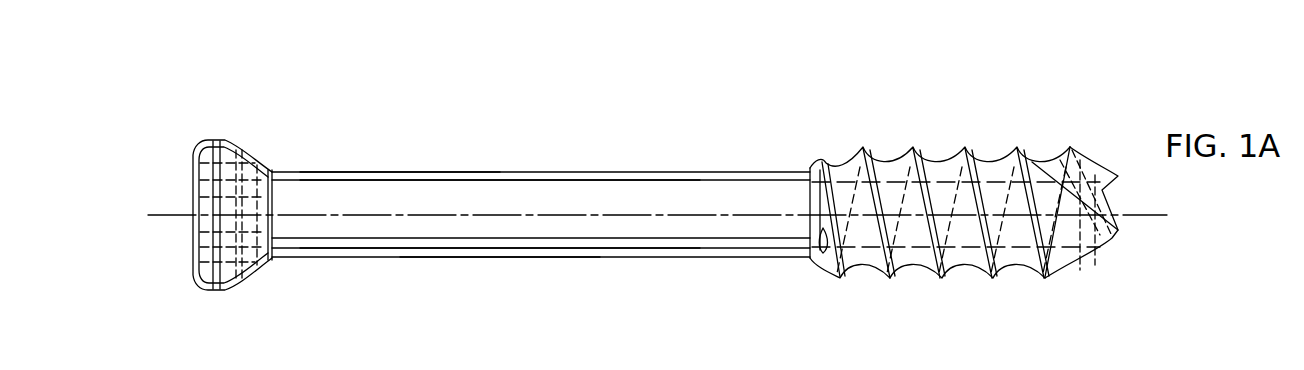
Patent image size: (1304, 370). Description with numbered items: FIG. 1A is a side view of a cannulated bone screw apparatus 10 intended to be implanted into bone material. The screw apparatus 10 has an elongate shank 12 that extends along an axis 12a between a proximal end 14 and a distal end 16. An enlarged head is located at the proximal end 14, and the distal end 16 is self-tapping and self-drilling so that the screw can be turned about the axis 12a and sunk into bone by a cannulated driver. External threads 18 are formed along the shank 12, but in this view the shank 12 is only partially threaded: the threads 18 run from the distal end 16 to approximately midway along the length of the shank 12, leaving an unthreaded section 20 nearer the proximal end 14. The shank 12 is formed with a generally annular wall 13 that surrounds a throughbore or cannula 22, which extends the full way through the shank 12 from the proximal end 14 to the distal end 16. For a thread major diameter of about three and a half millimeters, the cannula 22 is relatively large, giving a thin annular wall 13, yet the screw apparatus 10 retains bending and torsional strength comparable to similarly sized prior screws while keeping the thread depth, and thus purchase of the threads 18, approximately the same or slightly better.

The screw apparatus 10 is at (308, 113).
The elongate shank 12 is at (634, 171).
The axis 12a is at (176, 218).
The annular wall 13 is at (405, 171).
The proximal end 14 is at (206, 122).
The distal end 16 is at (1104, 151).
The external threads 18 is at (865, 152).
The unthreaded section 20 is at (482, 260).
The cannula 22 is at (517, 196).